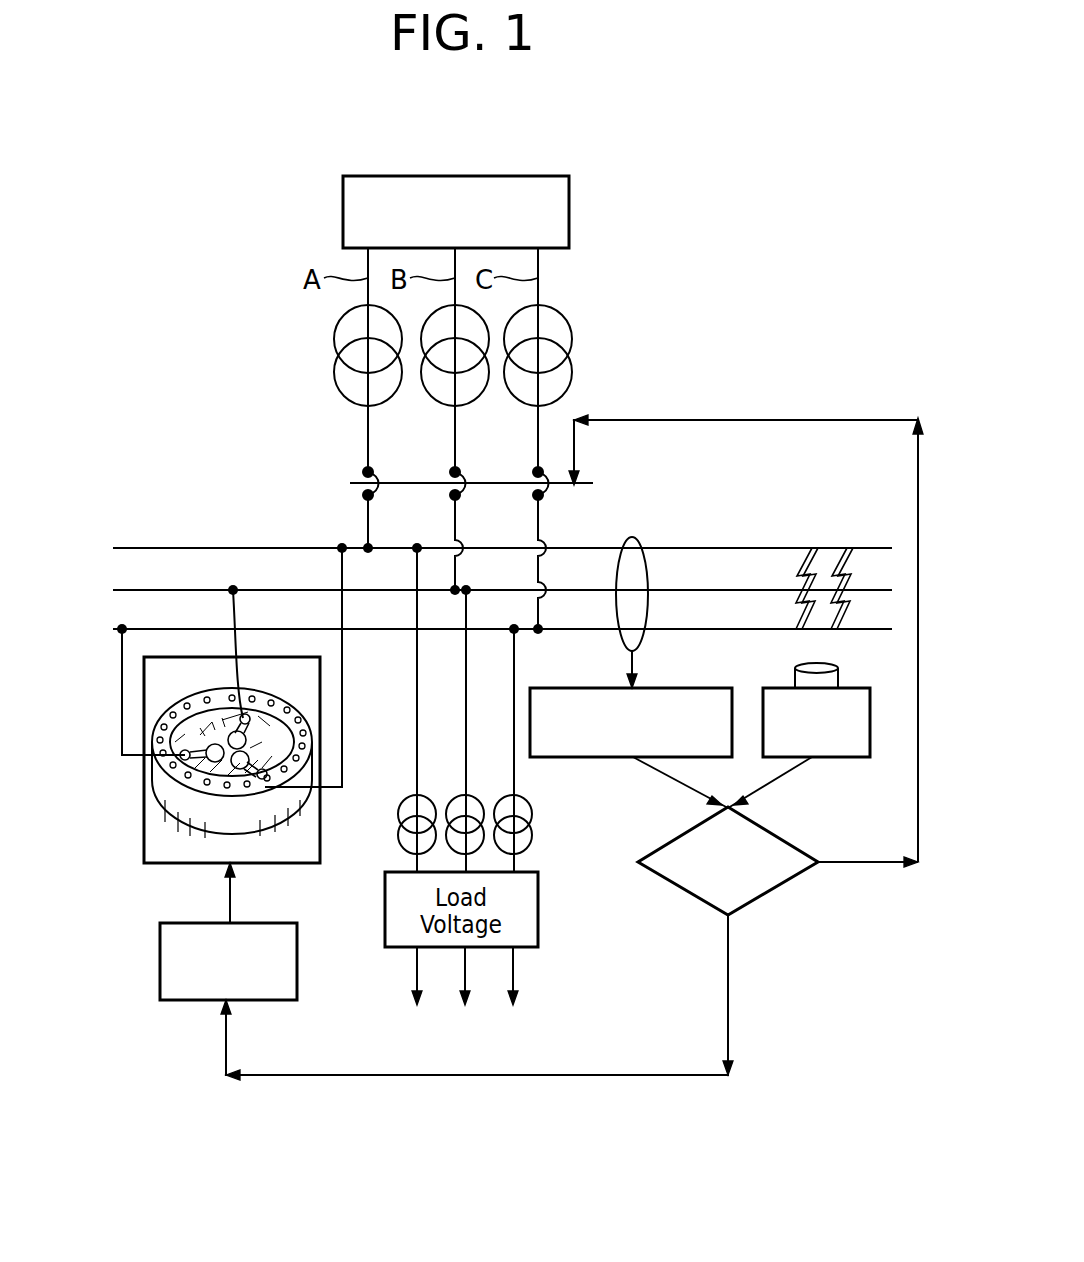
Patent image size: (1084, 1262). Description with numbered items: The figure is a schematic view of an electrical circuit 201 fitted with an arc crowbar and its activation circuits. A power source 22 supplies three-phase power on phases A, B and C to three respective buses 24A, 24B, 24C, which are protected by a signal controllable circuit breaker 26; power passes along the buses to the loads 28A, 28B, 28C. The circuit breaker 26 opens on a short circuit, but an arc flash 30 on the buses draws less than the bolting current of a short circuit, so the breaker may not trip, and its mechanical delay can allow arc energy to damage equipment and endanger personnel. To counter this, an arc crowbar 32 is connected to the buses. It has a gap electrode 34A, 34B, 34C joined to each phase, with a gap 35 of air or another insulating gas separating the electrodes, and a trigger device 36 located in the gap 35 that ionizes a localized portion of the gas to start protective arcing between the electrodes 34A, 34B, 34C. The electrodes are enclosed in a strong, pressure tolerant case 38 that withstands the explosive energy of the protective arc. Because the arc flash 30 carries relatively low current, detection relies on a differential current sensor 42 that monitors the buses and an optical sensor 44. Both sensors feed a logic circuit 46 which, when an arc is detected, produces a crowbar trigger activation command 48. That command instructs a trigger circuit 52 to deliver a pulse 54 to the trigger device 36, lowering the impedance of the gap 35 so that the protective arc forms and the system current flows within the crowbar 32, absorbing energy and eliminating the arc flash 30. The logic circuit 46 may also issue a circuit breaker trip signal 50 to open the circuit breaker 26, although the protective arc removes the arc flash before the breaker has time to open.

The power source 22 is at (569, 205).
The electrical circuit 201 is at (739, 272).
The signal controllable circuit breaker 26 is at (350, 483).
The bus 24A is at (113, 548).
The bus 24B is at (113, 590).
The bus 24C is at (113, 629).
The arc flash 30 is at (800, 550).
The load 28A is at (417, 982).
The load 28B is at (465, 982).
The load 28C is at (513, 982).
The differential current sensor 42 is at (575, 757).
The optical sensor 44 is at (838, 757).
The logic circuit 46 is at (675, 888).
The crowbar trigger activation command 48 is at (648, 1075).
The circuit breaker trip signal 50 is at (918, 838).
The trigger circuit 52 is at (160, 963).
The pulse 54 is at (230, 893).
The arc crowbar 32 is at (144, 828).
The gap 35 is at (172, 740).
The trigger device 36 is at (228, 770).
The case 38 is at (158, 803).
The gap electrode 34A is at (266, 768).
The gap electrode 34B is at (230, 732).
The gap electrode 34C is at (185, 762).